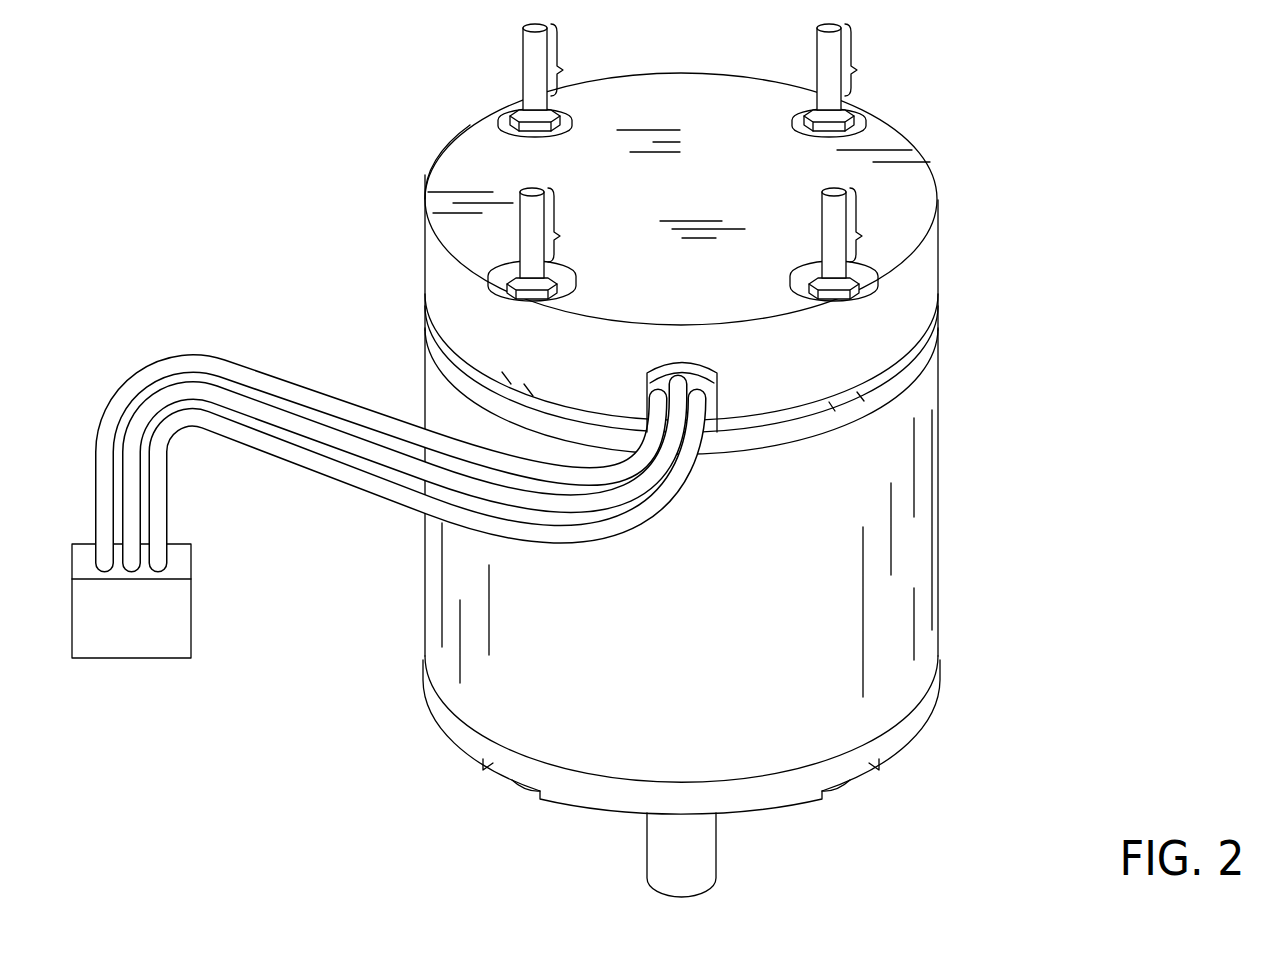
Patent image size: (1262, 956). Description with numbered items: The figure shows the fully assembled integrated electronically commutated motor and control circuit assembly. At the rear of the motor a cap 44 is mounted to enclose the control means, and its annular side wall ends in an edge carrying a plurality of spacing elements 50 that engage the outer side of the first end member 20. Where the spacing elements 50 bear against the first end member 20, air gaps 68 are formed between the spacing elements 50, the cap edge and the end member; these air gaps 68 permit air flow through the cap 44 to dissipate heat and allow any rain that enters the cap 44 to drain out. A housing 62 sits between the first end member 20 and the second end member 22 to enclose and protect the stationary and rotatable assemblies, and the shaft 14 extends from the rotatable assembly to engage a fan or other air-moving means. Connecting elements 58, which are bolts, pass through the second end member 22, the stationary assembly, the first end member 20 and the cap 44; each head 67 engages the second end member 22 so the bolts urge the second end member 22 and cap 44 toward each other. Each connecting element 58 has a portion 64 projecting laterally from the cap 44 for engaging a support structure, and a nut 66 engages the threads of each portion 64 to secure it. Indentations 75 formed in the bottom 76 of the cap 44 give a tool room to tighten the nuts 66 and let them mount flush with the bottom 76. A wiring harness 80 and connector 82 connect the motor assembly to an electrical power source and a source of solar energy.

The shaft 14 is at (700, 855).
The first end member 20 is at (930, 358).
The second end member 22 is at (920, 720).
The cap 44 is at (925, 281).
The spacing elements 50 is at (490, 404).
The connecting elements 58 is at (533, 66).
The housing 62 is at (918, 556).
The portion 64 is at (724, 143).
The nut 66 is at (512, 112).
The head 67 is at (520, 788).
The air gaps 68 is at (455, 365).
The indentations 75 is at (498, 121).
The bottom 76 is at (440, 178).
The wiring harness 80 is at (210, 378).
The connector 82 is at (105, 658).